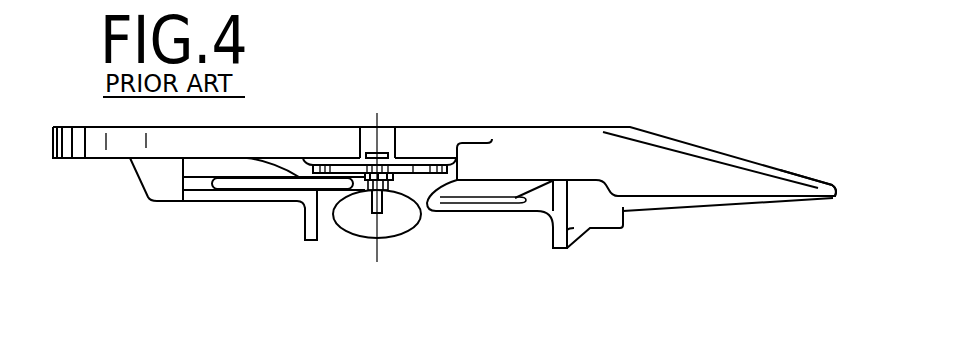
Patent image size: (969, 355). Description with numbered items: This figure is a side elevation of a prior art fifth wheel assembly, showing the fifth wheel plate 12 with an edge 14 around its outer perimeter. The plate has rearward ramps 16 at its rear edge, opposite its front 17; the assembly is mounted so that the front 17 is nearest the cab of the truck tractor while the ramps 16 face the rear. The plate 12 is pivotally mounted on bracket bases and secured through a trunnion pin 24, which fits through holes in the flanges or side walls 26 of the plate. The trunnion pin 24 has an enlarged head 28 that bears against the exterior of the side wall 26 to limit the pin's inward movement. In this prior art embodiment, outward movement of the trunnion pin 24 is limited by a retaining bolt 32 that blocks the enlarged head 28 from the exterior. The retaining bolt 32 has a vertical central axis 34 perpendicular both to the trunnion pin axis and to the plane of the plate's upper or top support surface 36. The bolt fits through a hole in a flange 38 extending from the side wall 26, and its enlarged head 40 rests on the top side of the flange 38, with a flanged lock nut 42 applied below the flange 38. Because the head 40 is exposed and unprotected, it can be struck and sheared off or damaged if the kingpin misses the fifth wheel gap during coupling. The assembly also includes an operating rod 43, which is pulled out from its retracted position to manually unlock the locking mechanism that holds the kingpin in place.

The fifth wheel plate 12 is at (626, 126).
The edge 14 is at (481, 127).
The rearward ramps 16 is at (828, 183).
The front 17 is at (53, 137).
The trunnion pin 24 is at (420, 215).
The side walls 26 is at (393, 210).
The enlarged head 28 is at (365, 177).
The retaining bolt 32 is at (386, 217).
The vertical central axis 34 is at (367, 126).
The top support surface 36 is at (257, 126).
The flange 38 is at (323, 178).
The enlarged head 40 is at (382, 157).
The flanged lock nut 42 is at (370, 192).
The operating rod 43 is at (223, 184).